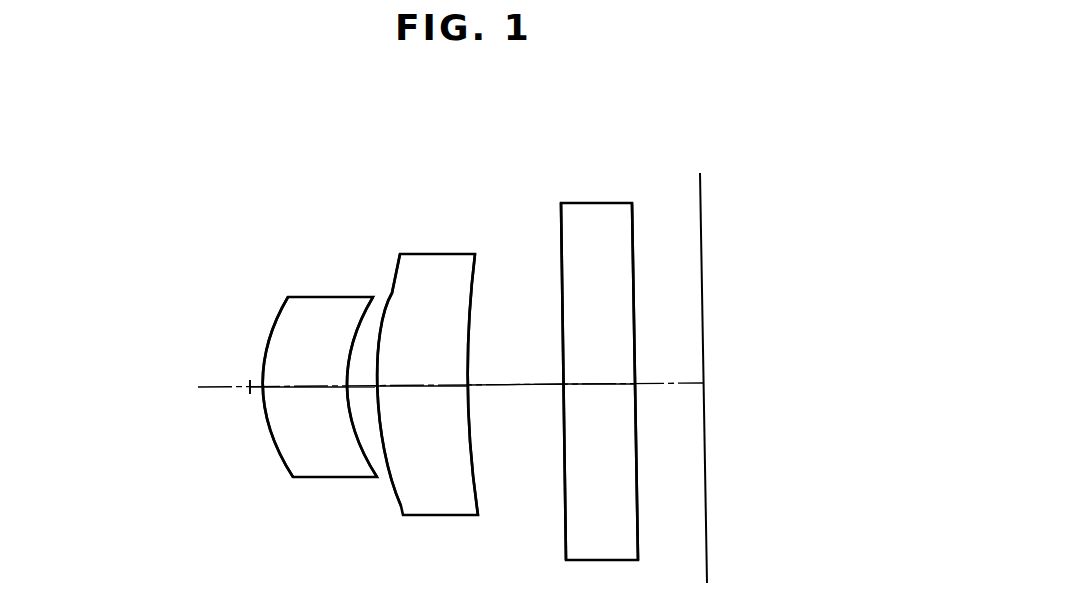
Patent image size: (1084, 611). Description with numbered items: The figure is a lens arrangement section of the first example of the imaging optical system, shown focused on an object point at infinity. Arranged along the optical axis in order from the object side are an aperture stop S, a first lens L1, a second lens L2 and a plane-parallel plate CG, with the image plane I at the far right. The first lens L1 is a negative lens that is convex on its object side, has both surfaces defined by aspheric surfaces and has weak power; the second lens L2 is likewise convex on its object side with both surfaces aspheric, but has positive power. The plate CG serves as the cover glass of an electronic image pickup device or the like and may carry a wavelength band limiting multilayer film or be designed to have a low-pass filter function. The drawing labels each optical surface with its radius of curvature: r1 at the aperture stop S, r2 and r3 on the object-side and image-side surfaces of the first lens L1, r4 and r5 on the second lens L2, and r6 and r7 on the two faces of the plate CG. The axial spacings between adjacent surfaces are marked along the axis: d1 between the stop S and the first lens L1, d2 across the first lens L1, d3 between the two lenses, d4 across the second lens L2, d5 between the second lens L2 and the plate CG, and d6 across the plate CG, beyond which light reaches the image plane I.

The aperture stop S is at (248, 316).
The first lens L1 is at (318, 300).
The second lens L2 is at (438, 263).
The cover glass CG is at (597, 218).
The image plane I is at (703, 265).
The radius of curvature r1 is at (247, 349).
The radius of curvature r2 is at (273, 330).
The radius of curvature r3 is at (360, 319).
The radius of curvature r4 is at (393, 299).
The radius of curvature r5 is at (475, 287).
The radius of curvature r6 is at (560, 231).
The radius of curvature r7 is at (632, 218).
The spacing d1 is at (257, 389).
The spacing d2 is at (305, 407).
The spacing d3 is at (385, 466).
The spacing d4 is at (421, 405).
The spacing d5 is at (515, 403).
The spacing d6 is at (599, 396).